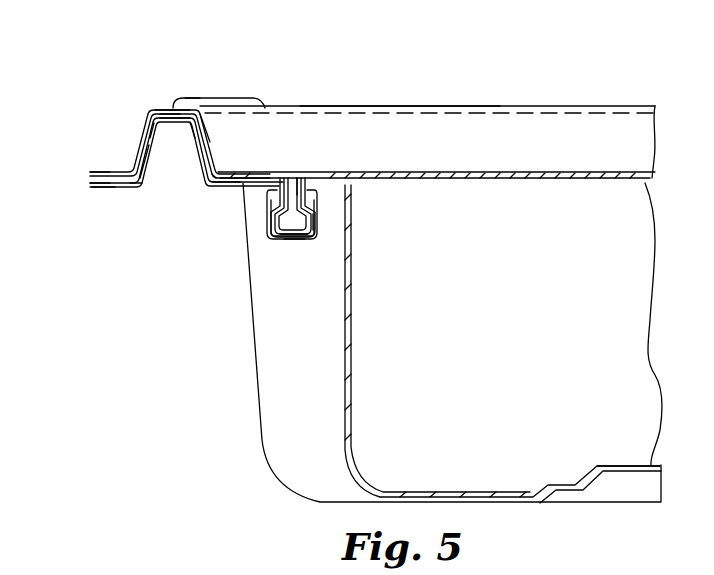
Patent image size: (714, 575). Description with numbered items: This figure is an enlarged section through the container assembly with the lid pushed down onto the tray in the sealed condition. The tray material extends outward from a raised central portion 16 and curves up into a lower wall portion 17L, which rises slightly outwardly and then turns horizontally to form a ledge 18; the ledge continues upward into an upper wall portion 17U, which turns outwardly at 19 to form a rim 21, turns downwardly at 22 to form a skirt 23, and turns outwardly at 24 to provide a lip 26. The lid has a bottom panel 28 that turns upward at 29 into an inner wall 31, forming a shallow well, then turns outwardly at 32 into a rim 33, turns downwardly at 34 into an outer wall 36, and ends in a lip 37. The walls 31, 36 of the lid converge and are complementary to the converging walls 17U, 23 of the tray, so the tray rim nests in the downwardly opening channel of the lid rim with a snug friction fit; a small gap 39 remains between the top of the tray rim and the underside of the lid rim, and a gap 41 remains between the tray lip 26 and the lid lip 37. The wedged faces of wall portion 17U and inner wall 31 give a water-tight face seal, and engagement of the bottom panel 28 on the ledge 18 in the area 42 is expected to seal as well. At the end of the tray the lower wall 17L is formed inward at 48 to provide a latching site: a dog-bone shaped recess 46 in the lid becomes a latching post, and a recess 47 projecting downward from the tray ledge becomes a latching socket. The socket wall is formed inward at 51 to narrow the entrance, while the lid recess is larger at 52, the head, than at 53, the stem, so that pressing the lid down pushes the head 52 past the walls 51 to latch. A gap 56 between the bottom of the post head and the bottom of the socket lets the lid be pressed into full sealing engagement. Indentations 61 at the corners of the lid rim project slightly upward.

The raised central portion 16 is at (615, 465).
The lower wall portion 17L is at (523, 395).
The upper wall portion 17U is at (182, 169).
The ledge 18 is at (270, 178).
The outward turn of upper wall 19 is at (197, 129).
The rim 21 is at (167, 110).
The downward turn of rim 22 is at (155, 128).
The skirt 23 is at (147, 160).
The outward turn of skirt 24 is at (142, 182).
The lip 26 is at (98, 190).
The bottom panel 28 is at (536, 172).
The upward turn of bottom panel 29 is at (222, 177).
The inner wall 31 is at (215, 119).
The outward turn of inner wall 32 is at (210, 98).
The rim 33 is at (181, 106).
The downward turn of rim 34 is at (150, 111).
The outer wall 36 is at (142, 139).
The lip 37 is at (97, 172).
The gap 39 is at (167, 115).
The gap 41 is at (87, 183).
The area 42 is at (237, 185).
The recess 46 is at (288, 178).
The recess 47 is at (290, 240).
The inward formed portion 48 is at (287, 373).
The socket wall 51 is at (267, 204).
The post head 52 is at (310, 208).
The stem 53 is at (300, 170).
The gap 56 is at (290, 233).
The indentations 61 is at (193, 99).